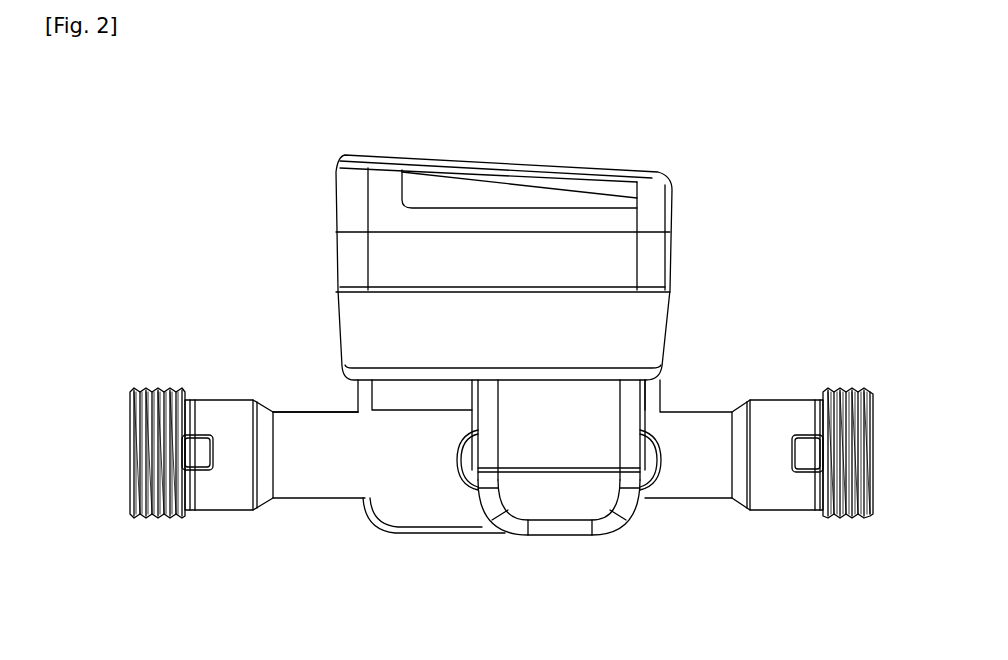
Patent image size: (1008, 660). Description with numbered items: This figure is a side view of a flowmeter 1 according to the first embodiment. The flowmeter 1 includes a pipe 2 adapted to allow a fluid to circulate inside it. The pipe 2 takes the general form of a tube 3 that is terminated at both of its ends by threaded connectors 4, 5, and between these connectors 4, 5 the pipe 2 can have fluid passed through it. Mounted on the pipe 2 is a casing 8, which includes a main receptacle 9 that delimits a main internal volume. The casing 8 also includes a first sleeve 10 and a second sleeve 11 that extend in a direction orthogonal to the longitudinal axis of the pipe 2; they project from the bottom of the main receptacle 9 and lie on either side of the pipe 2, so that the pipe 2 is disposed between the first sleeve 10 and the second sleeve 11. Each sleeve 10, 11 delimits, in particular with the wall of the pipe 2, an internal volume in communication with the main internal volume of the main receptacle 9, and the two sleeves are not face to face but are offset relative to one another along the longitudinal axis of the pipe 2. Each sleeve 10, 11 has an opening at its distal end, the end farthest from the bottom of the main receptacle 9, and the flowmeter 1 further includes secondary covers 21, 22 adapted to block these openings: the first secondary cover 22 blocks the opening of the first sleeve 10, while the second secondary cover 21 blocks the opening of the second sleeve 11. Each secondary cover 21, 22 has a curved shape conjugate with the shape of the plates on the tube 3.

The flowmeter 1 is at (245, 200).
The pipe 2 is at (316, 525).
The tube 3 is at (300, 425).
The threaded connector 4 is at (158, 537).
The threaded connector 5 is at (845, 530).
The casing 8 is at (680, 173).
The main receptacle 9 is at (316, 253).
The first sleeve 10 is at (343, 390).
The second sleeve 11 is at (657, 392).
The second secondary cover 21 is at (408, 520).
The first secondary cover 22 is at (562, 522).